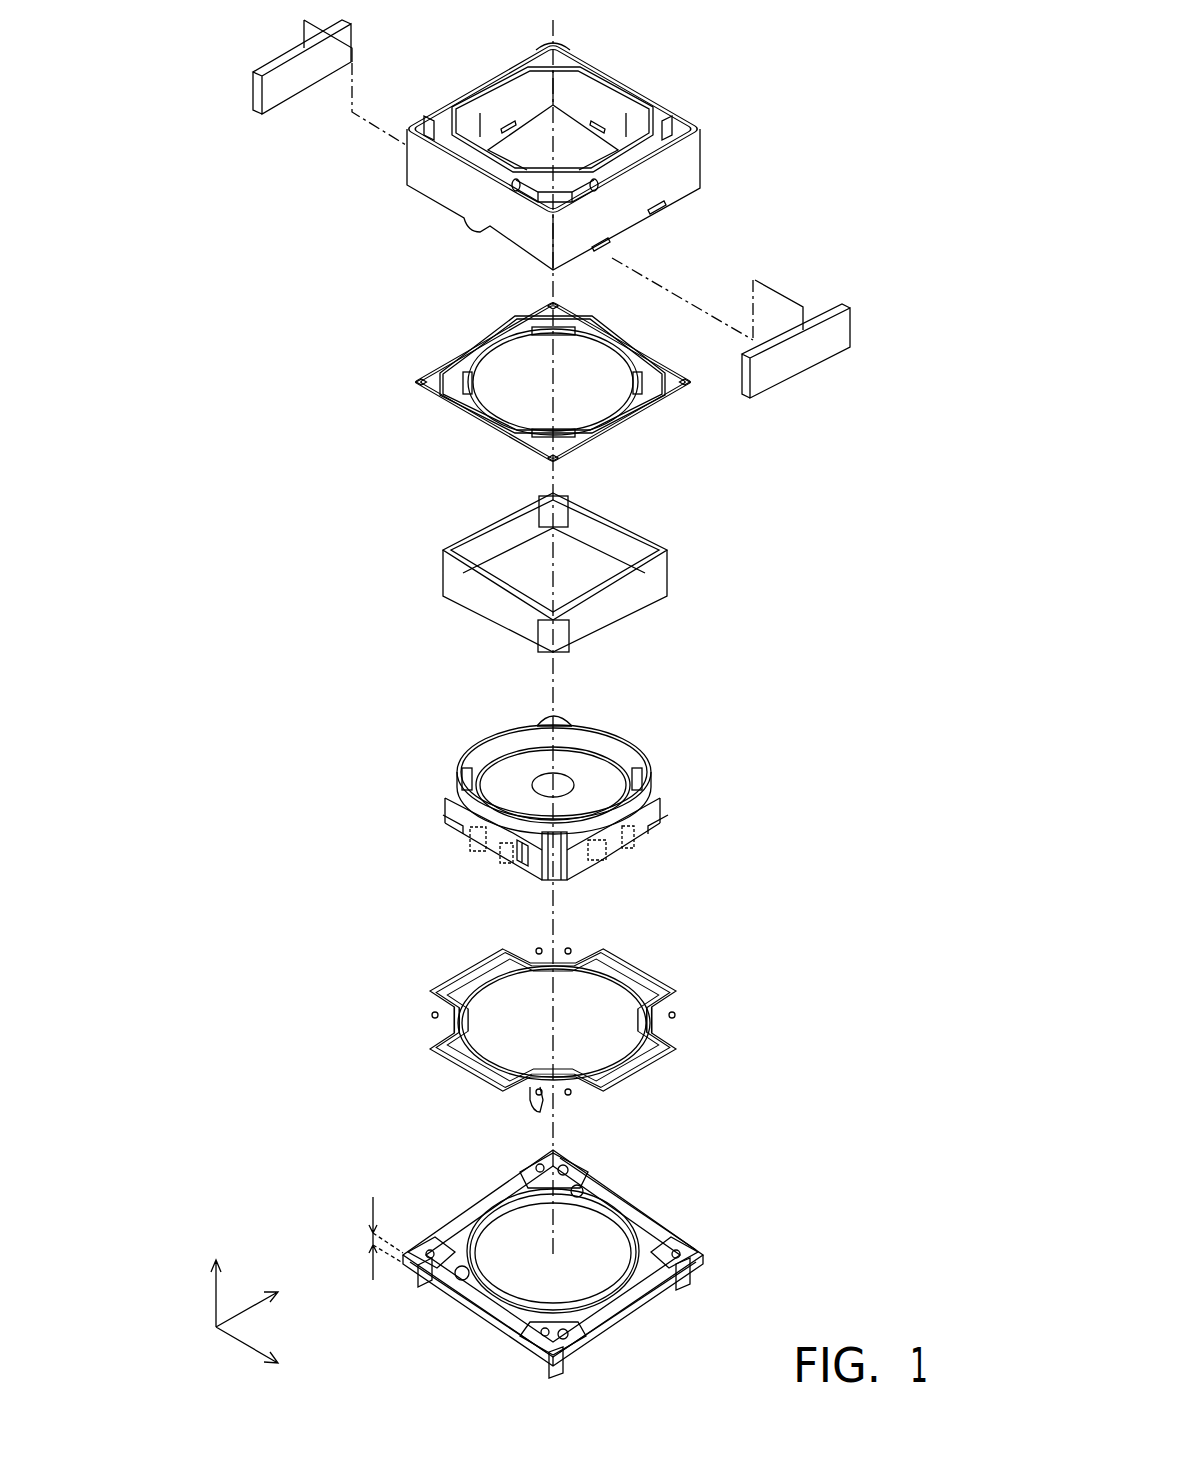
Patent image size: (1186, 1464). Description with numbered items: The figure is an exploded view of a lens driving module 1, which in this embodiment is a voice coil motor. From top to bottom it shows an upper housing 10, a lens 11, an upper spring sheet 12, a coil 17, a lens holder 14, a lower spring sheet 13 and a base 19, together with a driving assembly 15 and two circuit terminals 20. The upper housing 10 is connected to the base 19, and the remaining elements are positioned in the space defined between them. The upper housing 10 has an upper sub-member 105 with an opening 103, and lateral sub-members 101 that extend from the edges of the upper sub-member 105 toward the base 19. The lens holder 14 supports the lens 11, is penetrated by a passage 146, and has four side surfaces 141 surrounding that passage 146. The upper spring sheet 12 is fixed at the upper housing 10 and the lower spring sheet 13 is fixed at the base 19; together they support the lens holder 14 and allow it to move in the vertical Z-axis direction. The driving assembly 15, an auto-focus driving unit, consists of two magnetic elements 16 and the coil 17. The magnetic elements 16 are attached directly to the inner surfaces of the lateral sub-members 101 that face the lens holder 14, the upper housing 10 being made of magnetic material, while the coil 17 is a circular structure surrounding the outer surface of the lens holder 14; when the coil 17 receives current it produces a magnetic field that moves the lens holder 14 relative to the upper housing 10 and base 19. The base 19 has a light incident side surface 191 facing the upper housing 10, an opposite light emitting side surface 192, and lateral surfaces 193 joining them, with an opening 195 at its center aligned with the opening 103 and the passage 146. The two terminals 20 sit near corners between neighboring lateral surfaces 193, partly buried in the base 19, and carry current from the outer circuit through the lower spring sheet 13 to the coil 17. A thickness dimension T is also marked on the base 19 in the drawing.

The lens driving module 1 is at (539, 699).
The upper housing 10 is at (589, 143).
The lateral sub-member 101 is at (508, 222).
The opening 103 is at (498, 108).
The upper sub-member 105 is at (620, 82).
The lens 11 is at (543, 785).
The upper spring sheet 12 is at (427, 348).
The lower spring sheet 13 is at (677, 975).
The lens holder 14 is at (552, 778).
The side surface 141 is at (465, 817).
The passage 146 is at (607, 758).
The driving assembly 15 is at (547, 262).
The magnetic element 16 is at (270, 70).
The coil 17 is at (678, 540).
The base 19 is at (561, 1255).
The light incident side surface 191 is at (658, 1230).
The light emitting side surface 192 is at (633, 1298).
The lateral surface 193 is at (478, 1302).
The opening 195 is at (595, 1240).
The circuit terminal 20 is at (697, 1282).
The thickness of base T is at (376, 1238).